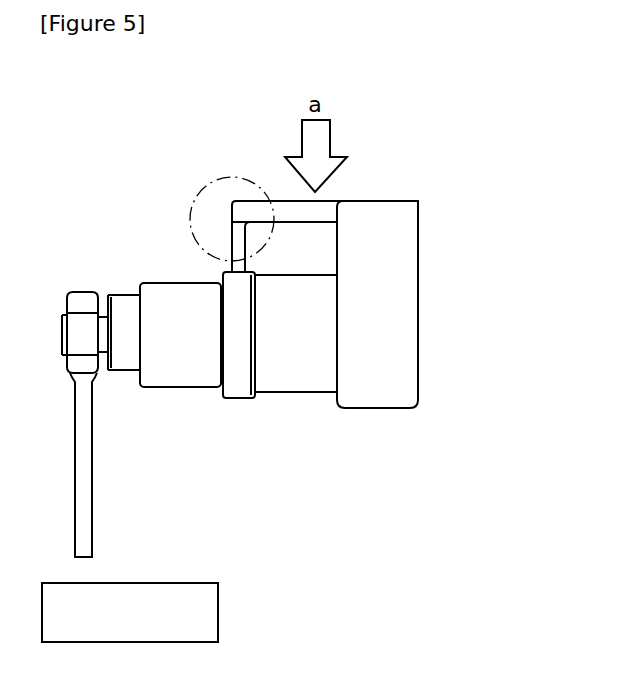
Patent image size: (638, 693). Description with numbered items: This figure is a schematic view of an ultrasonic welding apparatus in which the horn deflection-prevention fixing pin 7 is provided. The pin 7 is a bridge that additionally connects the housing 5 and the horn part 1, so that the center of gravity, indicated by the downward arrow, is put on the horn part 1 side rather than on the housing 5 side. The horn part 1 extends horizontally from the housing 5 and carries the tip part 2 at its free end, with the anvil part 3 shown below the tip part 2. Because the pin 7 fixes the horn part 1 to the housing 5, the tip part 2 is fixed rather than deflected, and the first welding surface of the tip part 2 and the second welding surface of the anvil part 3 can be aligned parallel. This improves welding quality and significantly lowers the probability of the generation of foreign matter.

The horn part 1 is at (185, 358).
The tip part 2 is at (87, 473).
The anvil part 3 is at (197, 617).
The housing 5 is at (383, 217).
The horn deflection-prevention fixing pin 7 is at (190, 215).